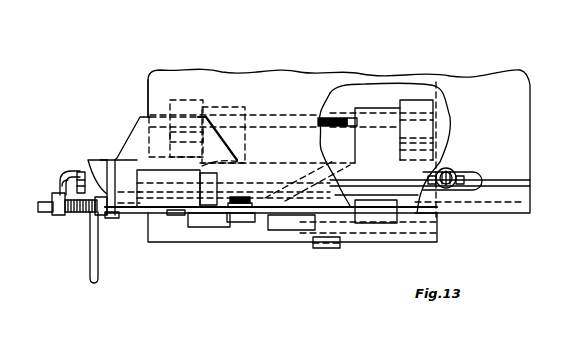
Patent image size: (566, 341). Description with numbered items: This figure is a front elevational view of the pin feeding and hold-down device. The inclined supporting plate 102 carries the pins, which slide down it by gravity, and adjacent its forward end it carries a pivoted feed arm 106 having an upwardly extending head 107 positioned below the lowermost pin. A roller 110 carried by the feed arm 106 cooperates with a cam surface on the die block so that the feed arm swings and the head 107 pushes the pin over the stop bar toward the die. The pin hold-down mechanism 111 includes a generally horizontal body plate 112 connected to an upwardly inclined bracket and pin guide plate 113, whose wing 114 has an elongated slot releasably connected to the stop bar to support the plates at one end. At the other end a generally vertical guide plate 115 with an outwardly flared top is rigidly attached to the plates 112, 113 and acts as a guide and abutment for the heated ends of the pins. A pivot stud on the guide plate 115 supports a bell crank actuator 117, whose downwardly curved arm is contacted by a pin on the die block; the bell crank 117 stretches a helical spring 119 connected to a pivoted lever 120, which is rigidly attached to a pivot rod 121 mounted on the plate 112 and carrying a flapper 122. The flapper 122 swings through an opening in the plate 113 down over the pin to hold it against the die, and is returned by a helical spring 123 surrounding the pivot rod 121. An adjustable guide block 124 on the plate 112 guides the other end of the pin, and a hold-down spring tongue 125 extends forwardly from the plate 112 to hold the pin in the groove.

The supporting plate 102 is at (280, 78).
The feed arm 106 is at (290, 258).
The head 107 is at (388, 193).
The roller 110 is at (330, 245).
The pin hold-down mechanism 111 is at (136, 92).
The body plate 112 is at (130, 214).
The bracket and pin guide plate 113 is at (135, 148).
The wing 114 is at (463, 177).
The vertical guide plate 115 is at (97, 168).
The bell crank actuator 117 is at (92, 259).
The helical spring 119 is at (72, 181).
The pivoted lever 120 is at (62, 186).
The pivot rod 121 is at (45, 208).
The flapper 122 is at (163, 177).
The helical spring 123 is at (70, 213).
The adjustable guide block 124 is at (238, 216).
The hold-down spring tongue 125 is at (182, 214).